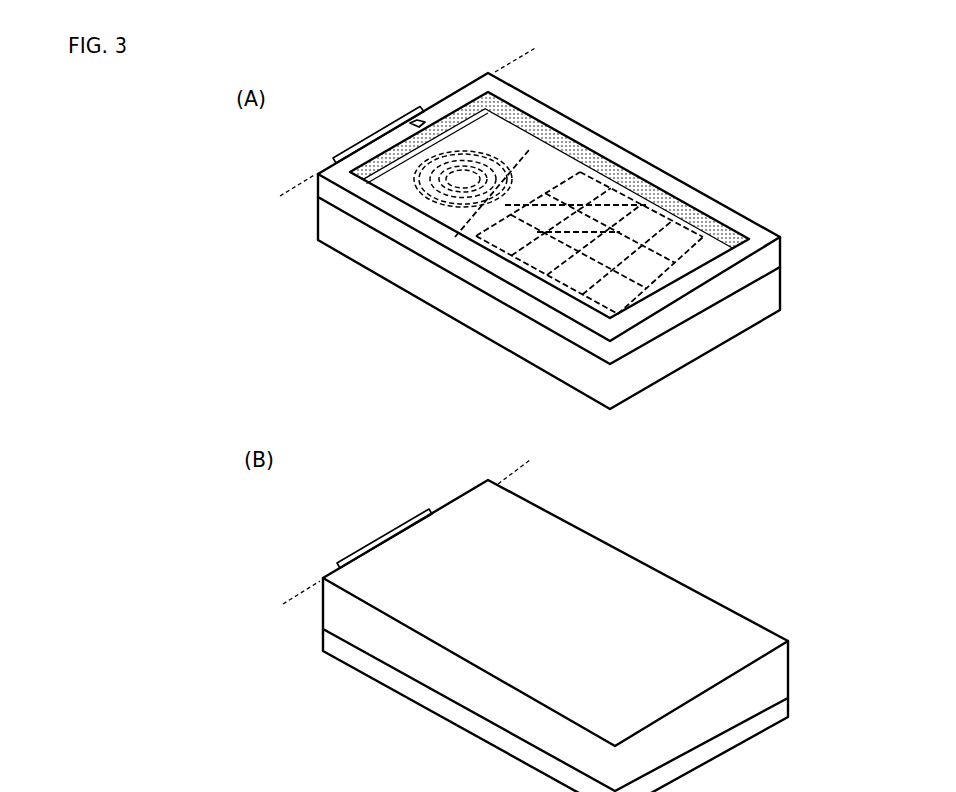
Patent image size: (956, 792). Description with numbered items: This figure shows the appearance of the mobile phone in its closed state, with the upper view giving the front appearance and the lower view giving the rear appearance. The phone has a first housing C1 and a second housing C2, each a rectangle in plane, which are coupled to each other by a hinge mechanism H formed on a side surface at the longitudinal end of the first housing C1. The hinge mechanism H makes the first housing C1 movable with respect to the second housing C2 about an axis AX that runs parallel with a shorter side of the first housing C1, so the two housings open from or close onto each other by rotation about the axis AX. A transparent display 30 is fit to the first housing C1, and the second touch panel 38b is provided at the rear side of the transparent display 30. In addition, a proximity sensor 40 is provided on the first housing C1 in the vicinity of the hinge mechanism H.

The transparent display 30 is at (605, 152).
The second touch panel 38b is at (656, 202).
The proximity sensor 40 is at (413, 121).
The first housing C1 is at (757, 228).
The second housing C2 is at (536, 355).
The hinge mechanism H is at (344, 146).
The axis AX is at (516, 50).